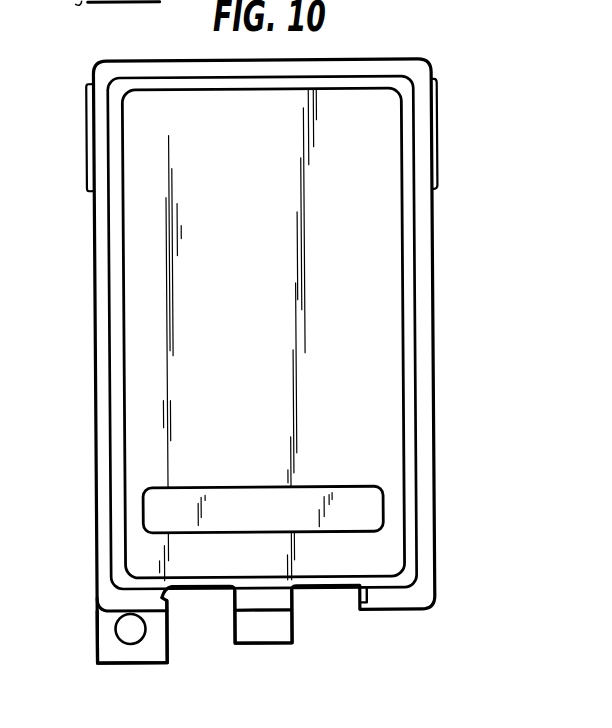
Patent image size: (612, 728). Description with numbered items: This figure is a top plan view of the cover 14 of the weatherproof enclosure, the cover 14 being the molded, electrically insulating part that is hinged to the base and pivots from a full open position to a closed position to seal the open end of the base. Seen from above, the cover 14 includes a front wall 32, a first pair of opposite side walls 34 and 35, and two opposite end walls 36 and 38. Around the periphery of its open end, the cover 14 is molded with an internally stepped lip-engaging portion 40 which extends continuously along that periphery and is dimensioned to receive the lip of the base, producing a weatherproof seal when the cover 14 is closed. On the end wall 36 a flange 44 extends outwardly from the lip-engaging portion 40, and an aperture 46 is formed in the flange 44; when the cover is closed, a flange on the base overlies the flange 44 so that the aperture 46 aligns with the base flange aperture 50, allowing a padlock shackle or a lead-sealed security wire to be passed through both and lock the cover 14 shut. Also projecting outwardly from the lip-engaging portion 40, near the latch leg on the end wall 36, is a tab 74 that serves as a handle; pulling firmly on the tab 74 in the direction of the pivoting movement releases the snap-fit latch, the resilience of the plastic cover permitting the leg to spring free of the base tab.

The cover 14 is at (452, 182).
The front wall 32 is at (389, 282).
The side wall 34 is at (404, 383).
The side wall 35 is at (125, 384).
The end wall 36 is at (373, 580).
The end wall 38 is at (343, 90).
The lip-engaging portion 40 is at (437, 515).
The flange 44 is at (107, 663).
The aperture 46 is at (122, 623).
The aperture 50 is at (105, 18).
The tab 74 is at (277, 645).